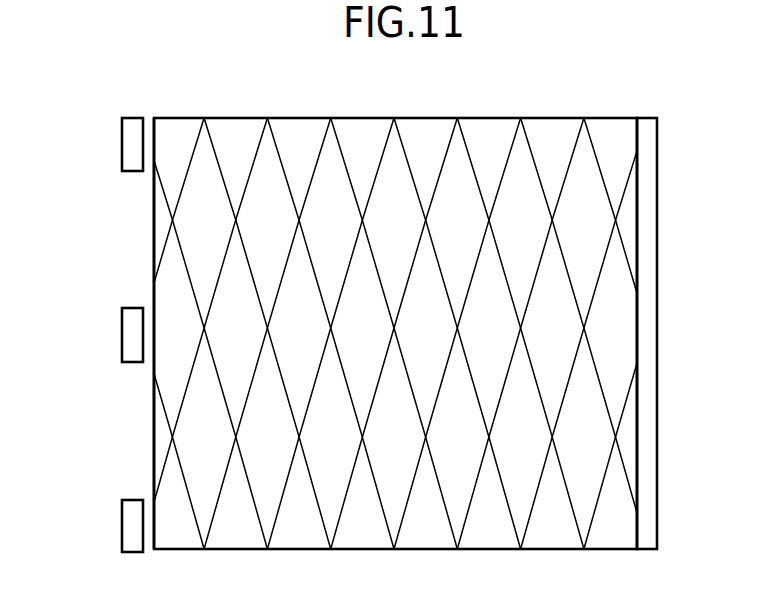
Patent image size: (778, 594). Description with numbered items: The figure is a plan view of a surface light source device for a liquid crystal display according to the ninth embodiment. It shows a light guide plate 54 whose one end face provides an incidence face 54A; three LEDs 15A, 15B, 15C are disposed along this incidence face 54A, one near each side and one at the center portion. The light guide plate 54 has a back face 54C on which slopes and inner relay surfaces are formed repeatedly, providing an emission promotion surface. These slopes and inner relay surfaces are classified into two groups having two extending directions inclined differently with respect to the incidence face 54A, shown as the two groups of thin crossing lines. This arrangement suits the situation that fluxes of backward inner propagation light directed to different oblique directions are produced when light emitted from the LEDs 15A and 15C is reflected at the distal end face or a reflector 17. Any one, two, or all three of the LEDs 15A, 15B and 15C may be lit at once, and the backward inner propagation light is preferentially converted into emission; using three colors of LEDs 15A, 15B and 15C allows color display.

The light guide plate 54 is at (366, 135).
The incidence face 54A is at (154, 432).
The back face 54C is at (554, 134).
The reflector 17 is at (652, 325).
The LED 15A is at (131, 145).
The LED 15B is at (131, 331).
The LED 15C is at (131, 519).